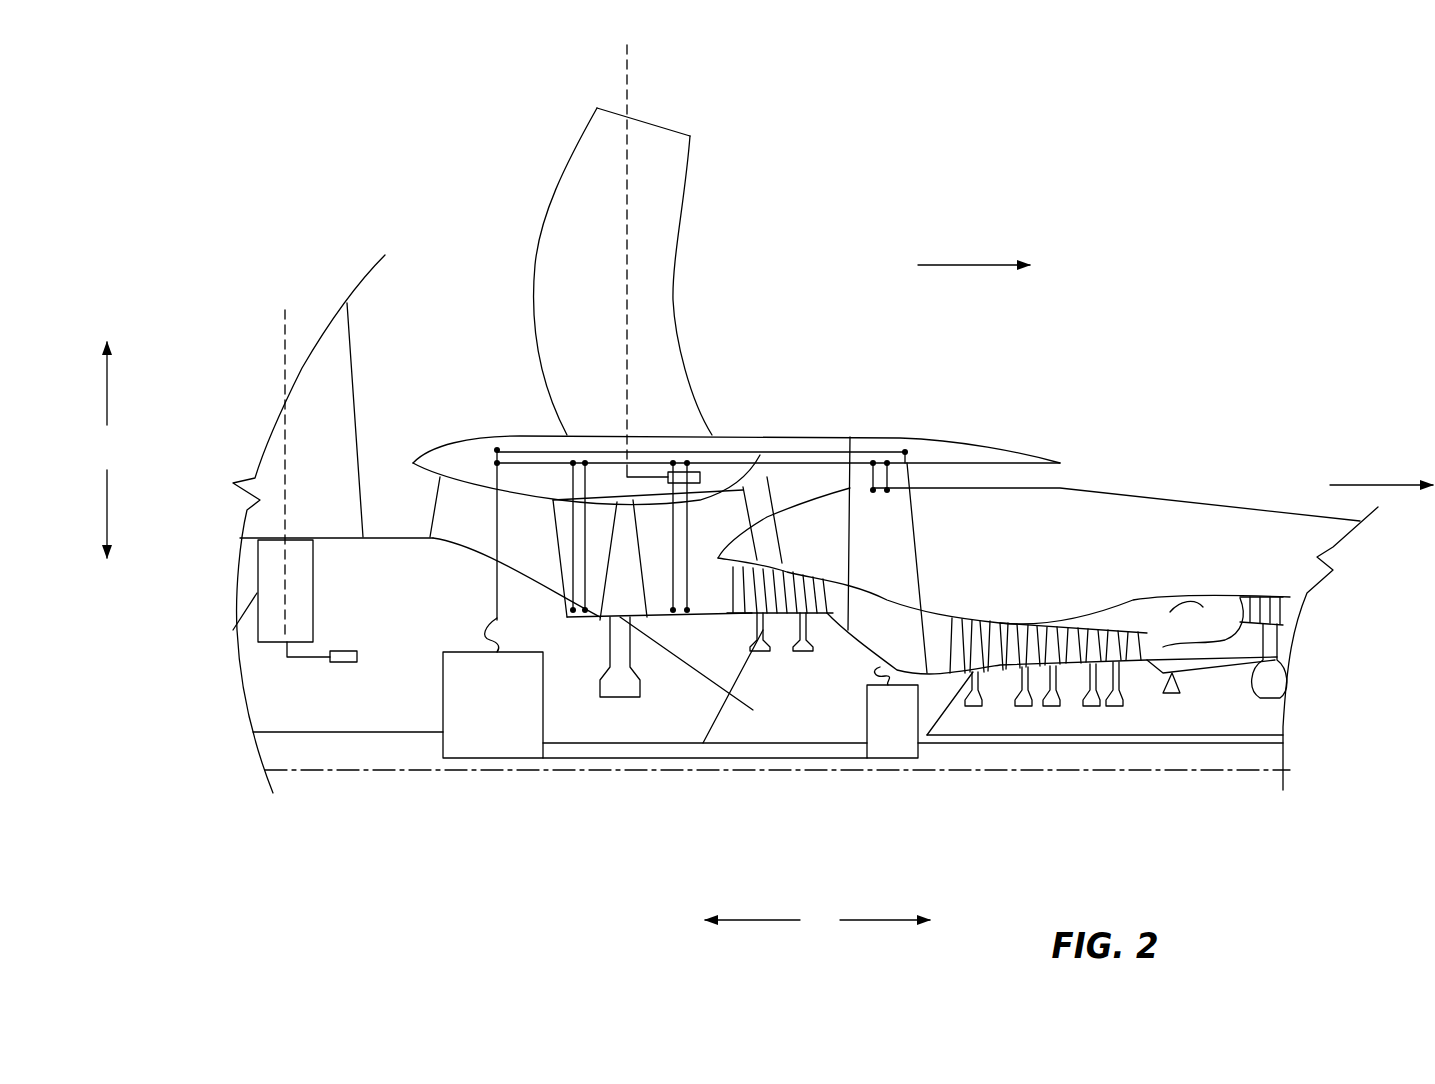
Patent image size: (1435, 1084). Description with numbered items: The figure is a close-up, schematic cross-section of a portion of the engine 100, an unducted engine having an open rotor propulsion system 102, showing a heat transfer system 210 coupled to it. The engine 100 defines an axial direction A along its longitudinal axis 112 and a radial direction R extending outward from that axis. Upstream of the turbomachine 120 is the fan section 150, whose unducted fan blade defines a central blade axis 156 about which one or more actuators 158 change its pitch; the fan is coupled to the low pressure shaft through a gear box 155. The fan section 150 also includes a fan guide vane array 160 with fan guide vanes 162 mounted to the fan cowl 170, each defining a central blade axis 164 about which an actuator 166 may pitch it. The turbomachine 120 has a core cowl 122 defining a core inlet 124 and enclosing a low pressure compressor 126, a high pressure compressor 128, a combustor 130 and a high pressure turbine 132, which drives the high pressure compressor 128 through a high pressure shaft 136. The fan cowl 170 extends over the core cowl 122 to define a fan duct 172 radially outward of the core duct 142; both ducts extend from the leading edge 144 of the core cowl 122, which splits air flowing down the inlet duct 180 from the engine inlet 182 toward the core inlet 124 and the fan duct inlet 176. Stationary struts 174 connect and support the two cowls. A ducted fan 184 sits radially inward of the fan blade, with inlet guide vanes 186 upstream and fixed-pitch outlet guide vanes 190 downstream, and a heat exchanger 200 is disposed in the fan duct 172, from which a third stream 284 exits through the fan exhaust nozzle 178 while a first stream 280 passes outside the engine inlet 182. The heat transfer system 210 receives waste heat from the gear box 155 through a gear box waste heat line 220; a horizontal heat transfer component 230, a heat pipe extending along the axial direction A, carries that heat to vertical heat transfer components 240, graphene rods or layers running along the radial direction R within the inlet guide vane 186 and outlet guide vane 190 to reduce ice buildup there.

The engine 100 is at (1128, 160).
The open rotor propulsion system 102 is at (295, 126).
The longitudinal axis 112 is at (1027, 772).
The turbomachine 120 is at (1102, 605).
The core cowl 122 is at (1080, 484).
The core inlet 124 is at (712, 603).
The low pressure compressor 126 is at (780, 646).
The high pressure compressor 128 is at (1073, 695).
The combustor 130 is at (1176, 657).
The high pressure turbine 132 is at (1278, 576).
The high pressure shaft 136 is at (1267, 718).
The core duct 142 is at (1199, 610).
The leading edge 144 is at (722, 600).
The fan section 150 is at (282, 272).
The gear box 155 is at (505, 728).
The central blade axis 156 is at (285, 354).
The actuator 158 is at (343, 663).
The fan guide vane array 160 is at (458, 220).
The fan guide vane 162 is at (665, 260).
The central blade axis 164 is at (627, 92).
The actuator 166 is at (700, 442).
The fan cowl 170 is at (780, 444).
The fan duct 172 is at (828, 482).
The stationary strut 174 is at (880, 533).
The fan duct inlet 176 is at (716, 536).
The fan exhaust nozzle 178 is at (1054, 461).
The inlet duct 180 is at (537, 572).
The engine inlet 182 is at (410, 505).
The ducted fan 184 is at (500, 447).
The inlet guide vane 186 is at (553, 533).
The outlet guide vane 190 is at (652, 505).
The heat exchanger 200 is at (760, 510).
The heat transfer system 210 is at (651, 418).
The gear box waste heat line 220 is at (500, 533).
The horizontal heat transfer component 230 is at (805, 440).
The vertical heat transfer component 240 is at (555, 578).
The first stream 280 is at (955, 262).
The third stream 284 is at (1378, 484).
The radial direction R is at (106, 450).
The axial direction A is at (817, 921).